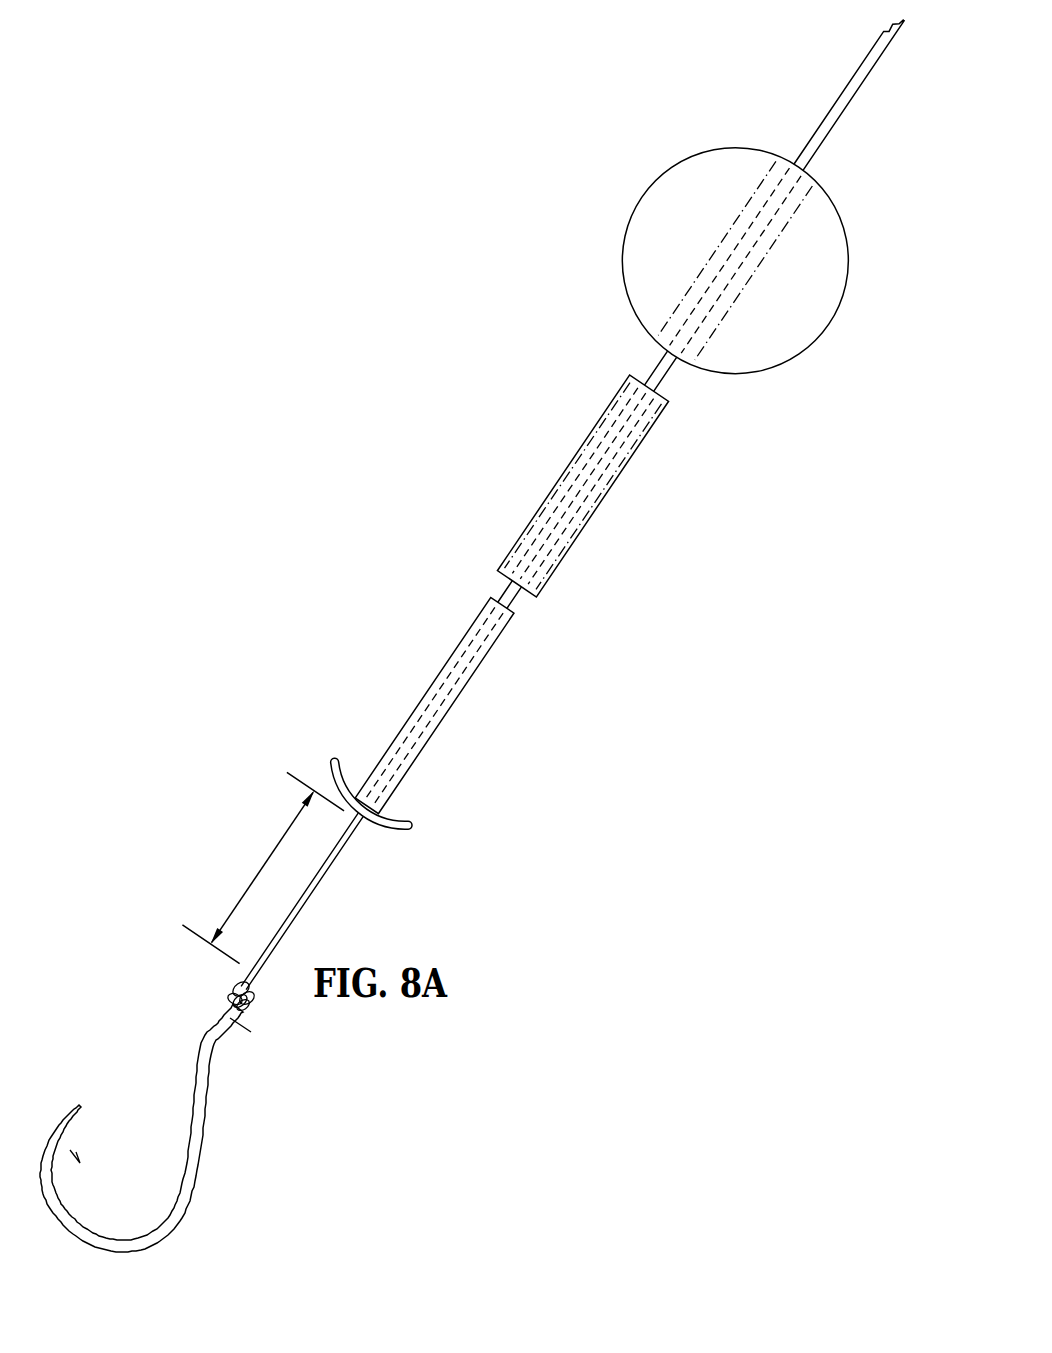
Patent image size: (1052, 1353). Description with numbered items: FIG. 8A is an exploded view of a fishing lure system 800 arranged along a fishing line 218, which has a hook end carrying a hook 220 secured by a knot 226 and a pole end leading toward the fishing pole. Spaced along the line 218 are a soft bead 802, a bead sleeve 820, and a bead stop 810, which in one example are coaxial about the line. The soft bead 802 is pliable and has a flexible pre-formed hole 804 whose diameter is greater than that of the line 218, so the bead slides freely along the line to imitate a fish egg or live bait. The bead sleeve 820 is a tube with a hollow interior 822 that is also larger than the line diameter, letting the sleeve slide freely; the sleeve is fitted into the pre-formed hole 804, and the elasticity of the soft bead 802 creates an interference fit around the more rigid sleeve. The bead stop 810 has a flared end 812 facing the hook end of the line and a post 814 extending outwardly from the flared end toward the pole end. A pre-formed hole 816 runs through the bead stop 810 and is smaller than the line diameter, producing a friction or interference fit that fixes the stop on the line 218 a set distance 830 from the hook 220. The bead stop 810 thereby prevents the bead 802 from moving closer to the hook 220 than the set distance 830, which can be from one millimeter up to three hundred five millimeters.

The fishing rig assembly 800 is at (323, 368).
The fishing line 218 is at (842, 113).
The soft bead 802 is at (839, 207).
The pre-formed hole 804 is at (782, 231).
The bead sleeve 820 is at (646, 440).
The hollow interior 822 is at (613, 470).
The bead stop 810 is at (457, 707).
The post 814 is at (422, 698).
The pre-formed hole 816 is at (453, 690).
The flared end 812 is at (414, 822).
The set distance 830 is at (277, 853).
The knot 226 is at (228, 995).
The hook 220 is at (200, 1156).